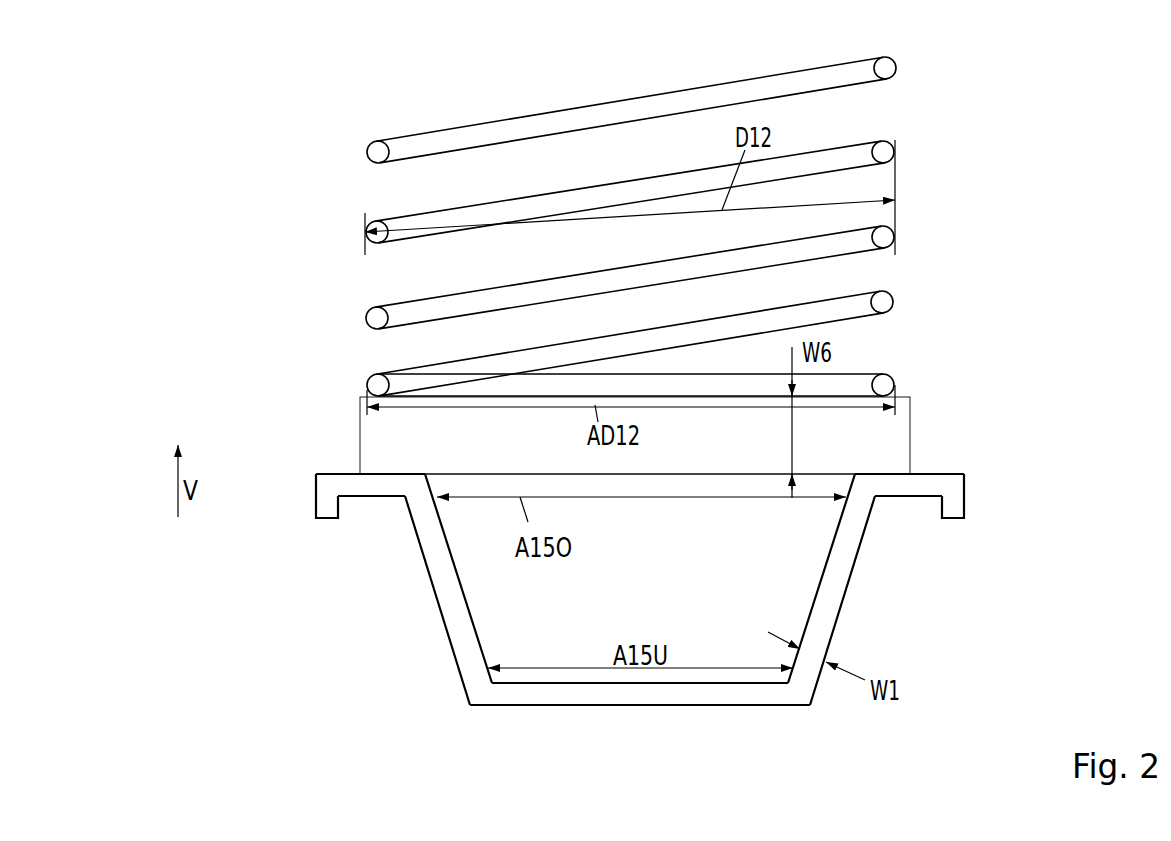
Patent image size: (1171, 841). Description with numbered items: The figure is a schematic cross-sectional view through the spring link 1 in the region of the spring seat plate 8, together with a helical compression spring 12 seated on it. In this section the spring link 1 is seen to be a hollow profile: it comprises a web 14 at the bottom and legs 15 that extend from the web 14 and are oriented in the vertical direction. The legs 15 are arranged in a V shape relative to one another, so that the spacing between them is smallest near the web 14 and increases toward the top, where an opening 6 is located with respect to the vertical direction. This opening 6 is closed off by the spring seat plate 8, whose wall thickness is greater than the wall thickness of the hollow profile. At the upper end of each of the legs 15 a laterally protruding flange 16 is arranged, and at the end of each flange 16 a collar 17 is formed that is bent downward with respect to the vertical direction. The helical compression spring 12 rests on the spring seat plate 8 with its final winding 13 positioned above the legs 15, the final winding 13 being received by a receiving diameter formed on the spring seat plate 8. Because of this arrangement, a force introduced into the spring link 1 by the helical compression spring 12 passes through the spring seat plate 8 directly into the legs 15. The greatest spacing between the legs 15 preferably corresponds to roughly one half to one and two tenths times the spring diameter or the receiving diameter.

The spring link 1 is at (638, 583).
The opening 6 is at (694, 494).
The spring seat plate 8 is at (395, 432).
The helical compression spring 12 is at (616, 226).
The final winding 13 is at (893, 380).
The web 14 is at (642, 695).
The legs 15 is at (443, 590).
The flanges 16 is at (337, 482).
The collar 17 is at (327, 517).